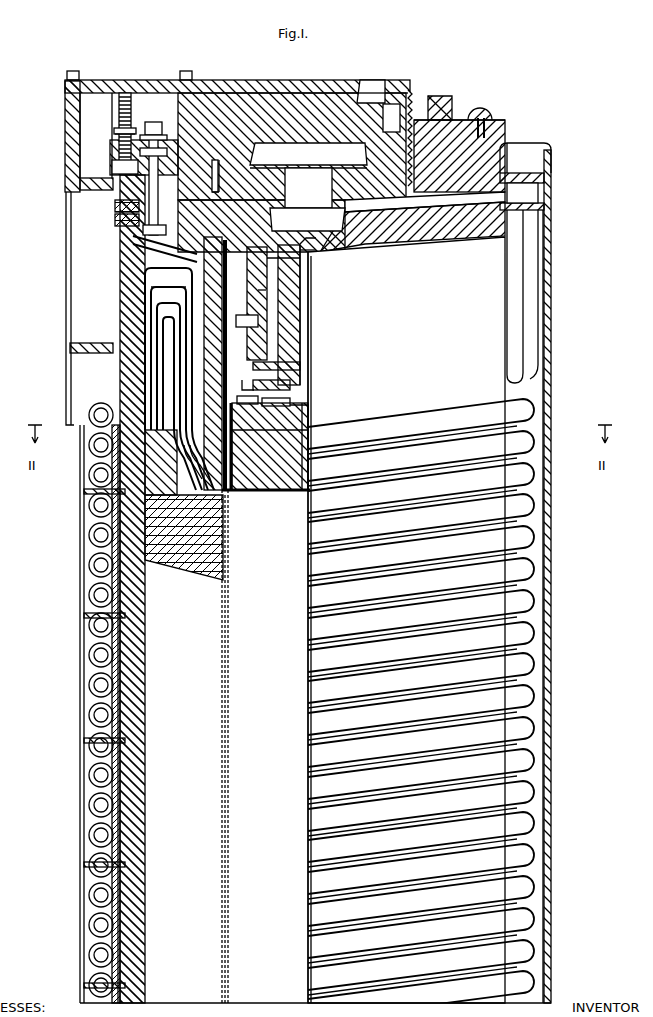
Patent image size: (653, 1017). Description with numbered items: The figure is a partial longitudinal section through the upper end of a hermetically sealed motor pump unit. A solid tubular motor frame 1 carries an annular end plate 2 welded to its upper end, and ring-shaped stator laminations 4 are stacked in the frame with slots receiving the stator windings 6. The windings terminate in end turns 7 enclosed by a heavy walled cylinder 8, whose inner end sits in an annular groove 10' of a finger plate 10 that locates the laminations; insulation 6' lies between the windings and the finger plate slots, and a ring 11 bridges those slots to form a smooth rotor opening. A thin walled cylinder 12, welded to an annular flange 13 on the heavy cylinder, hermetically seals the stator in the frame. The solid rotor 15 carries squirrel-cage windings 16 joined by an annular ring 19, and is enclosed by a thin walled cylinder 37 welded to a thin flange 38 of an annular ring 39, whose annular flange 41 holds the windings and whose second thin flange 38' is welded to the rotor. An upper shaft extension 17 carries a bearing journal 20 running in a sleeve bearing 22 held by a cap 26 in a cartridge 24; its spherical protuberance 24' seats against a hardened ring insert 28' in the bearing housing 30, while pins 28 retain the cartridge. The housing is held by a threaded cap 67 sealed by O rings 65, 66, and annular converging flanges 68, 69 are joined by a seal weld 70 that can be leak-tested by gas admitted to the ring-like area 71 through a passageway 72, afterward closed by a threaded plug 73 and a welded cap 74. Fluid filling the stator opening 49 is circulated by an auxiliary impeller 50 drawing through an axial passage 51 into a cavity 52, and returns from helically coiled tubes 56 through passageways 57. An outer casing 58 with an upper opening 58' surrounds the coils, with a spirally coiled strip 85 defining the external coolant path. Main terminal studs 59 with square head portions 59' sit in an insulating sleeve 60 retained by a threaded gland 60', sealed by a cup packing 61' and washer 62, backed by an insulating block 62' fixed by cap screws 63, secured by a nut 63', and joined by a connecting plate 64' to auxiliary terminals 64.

The motor frame 1 is at (82, 823).
The end plate 2 is at (165, 249).
The stator laminations 4 is at (225, 537).
The stator windings 6 is at (150, 462).
The insulation 6' is at (198, 179).
The end turns 7 is at (145, 357).
The heavy walled cylinder 8 is at (204, 345).
The finger plate 10 is at (194, 447).
The annular groove 10' is at (199, 440).
The ring 11 is at (232, 498).
The thin walled cylinder 12 is at (204, 312).
The annular flange 13 is at (193, 272).
The rotor 15 is at (300, 640).
The squirrel-cage windings 16 is at (273, 458).
The shaft extension 17 is at (300, 325).
The annular ring 19 is at (273, 475).
The bearing journal 20 is at (300, 270).
The sleeve bearing 22 is at (292, 310).
The cartridge 24 is at (315, 252).
The spherical protuberance 24' is at (329, 258).
The cap 26 is at (290, 342).
The pins 28 is at (242, 326).
The hardened ring insert 28' is at (304, 289).
The bearing housing 30 is at (420, 172).
The thin walled cylinder 37 is at (250, 501).
The thin flange 38 is at (247, 399).
The second thin flange 38' is at (276, 399).
The annular ring 39 is at (270, 417).
The annular flange 41 is at (262, 440).
The stator opening 49 is at (228, 612).
The auxiliary impeller 50 is at (253, 362).
The axial passage 51 is at (238, 389).
The cavity 52 is at (307, 219).
The coiled tubes 56 is at (523, 290).
The passageways 57 is at (538, 192).
The outer casing 58 is at (81, 714).
The upper opening 58' is at (55, 253).
The main terminal stud 59 is at (109, 205).
The square head portion 59' is at (109, 220).
The insulating sleeve 60 is at (199, 211).
The threaded gland 60' is at (198, 187).
The cup packing 61' is at (115, 160).
The washer 62 is at (112, 145).
The insulating block 62' is at (113, 123).
The cap screws 63 is at (116, 115).
The nut 63' is at (161, 126).
The auxiliary terminals 64 is at (122, 114).
The connecting plate 64' is at (152, 165).
The O ring 65 is at (308, 154).
The O ring 66 is at (308, 157).
The threaded cap 67 is at (360, 93).
The annular converging flange 68 is at (400, 93).
The annular converging flange 69 is at (440, 96).
The seal weld 70 is at (412, 86).
The ring-like area 71 is at (446, 92).
The passageway 72 is at (480, 140).
The threaded plug 73 is at (490, 106).
The cap 74 is at (497, 114).
The spirally coiled strip 85 is at (534, 548).